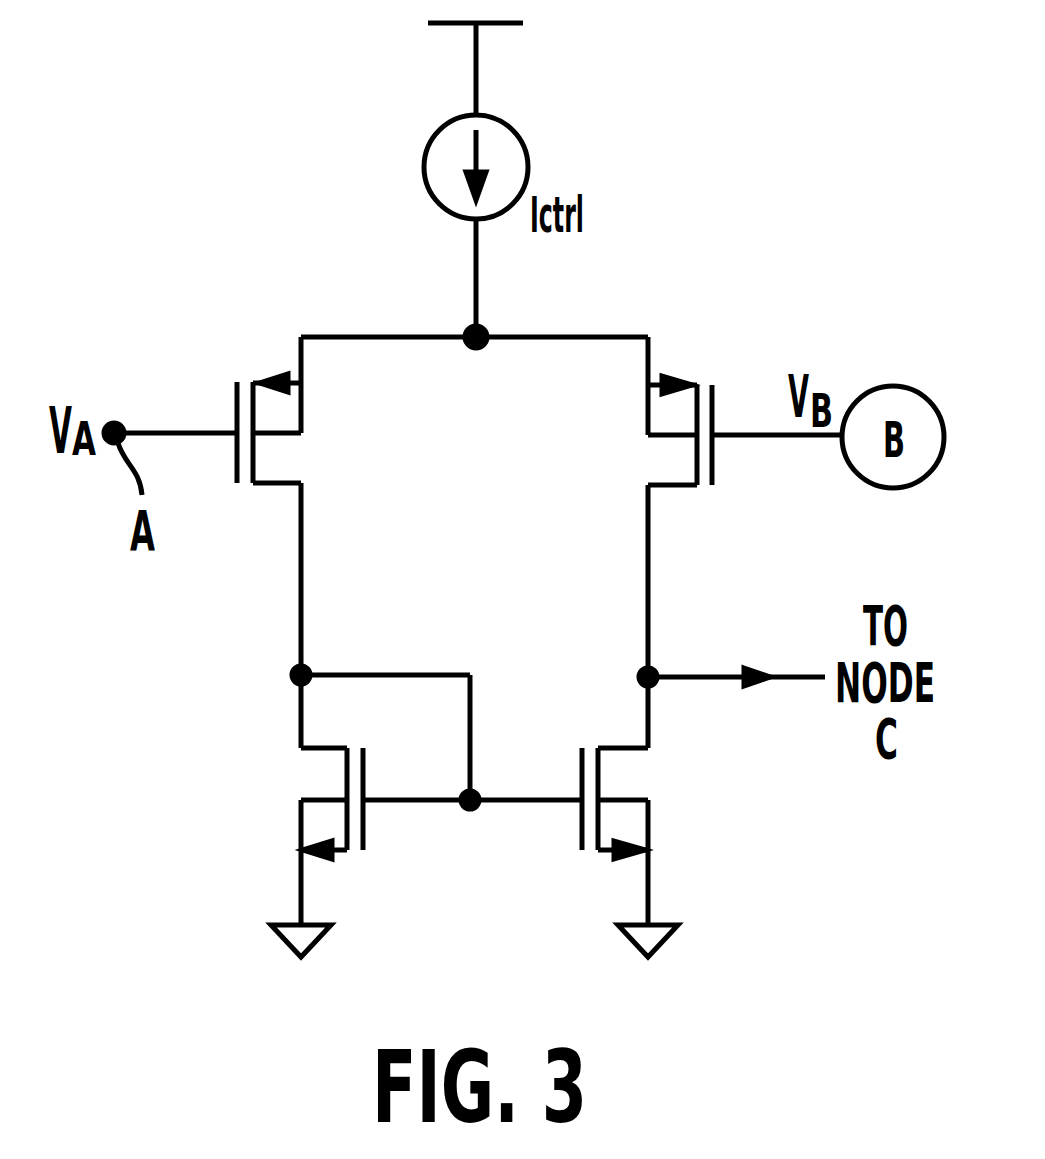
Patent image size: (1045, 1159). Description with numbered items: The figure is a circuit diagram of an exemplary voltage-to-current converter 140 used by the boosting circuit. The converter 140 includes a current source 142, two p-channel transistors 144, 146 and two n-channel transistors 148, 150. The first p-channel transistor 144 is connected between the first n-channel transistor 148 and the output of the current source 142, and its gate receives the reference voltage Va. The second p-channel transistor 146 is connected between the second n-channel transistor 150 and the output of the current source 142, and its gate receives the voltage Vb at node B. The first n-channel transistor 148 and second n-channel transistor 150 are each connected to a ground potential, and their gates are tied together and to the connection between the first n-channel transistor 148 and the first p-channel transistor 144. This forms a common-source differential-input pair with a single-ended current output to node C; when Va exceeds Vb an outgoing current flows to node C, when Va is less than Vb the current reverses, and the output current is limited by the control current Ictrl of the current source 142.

The voltage-to-current converter 140 is at (142, 260).
The current source 142 is at (528, 166).
The first p-channel transistor 144 is at (298, 485).
The second p-channel transistor 146 is at (650, 490).
The first n-channel transistor 148 is at (366, 808).
The second n-channel transistor 150 is at (578, 808).